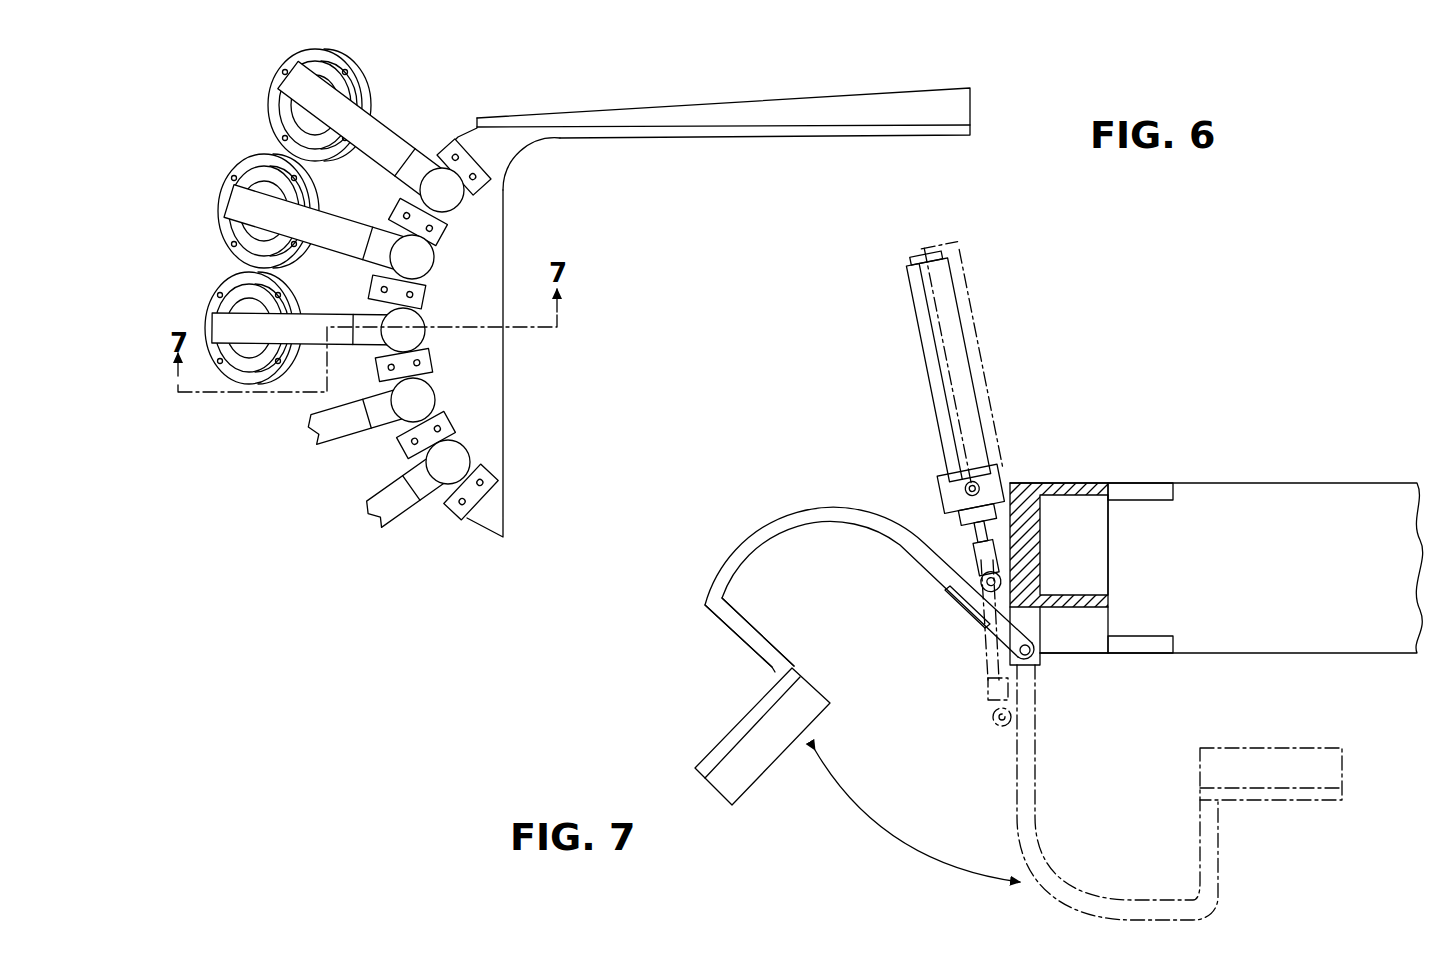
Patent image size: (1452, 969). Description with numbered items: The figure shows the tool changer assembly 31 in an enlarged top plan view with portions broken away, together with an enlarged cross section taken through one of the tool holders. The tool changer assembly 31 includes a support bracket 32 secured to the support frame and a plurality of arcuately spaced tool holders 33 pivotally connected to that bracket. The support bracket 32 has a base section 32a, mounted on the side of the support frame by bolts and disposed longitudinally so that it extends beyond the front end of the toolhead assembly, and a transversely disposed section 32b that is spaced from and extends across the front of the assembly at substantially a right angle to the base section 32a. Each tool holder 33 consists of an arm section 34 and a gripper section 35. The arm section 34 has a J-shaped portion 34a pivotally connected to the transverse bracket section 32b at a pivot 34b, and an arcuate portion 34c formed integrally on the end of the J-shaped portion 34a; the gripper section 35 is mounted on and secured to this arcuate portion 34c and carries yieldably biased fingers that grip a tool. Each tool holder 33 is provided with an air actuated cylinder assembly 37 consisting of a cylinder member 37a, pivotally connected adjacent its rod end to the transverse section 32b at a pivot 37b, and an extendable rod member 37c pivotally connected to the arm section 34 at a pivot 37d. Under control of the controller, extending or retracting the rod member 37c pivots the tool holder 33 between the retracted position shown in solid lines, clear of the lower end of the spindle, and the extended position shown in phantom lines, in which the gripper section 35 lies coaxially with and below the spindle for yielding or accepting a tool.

In FIG. 6, the tool changer assembly 31 is at (238, 122).
In FIG. 6, the support bracket 32 is at (768, 112).
In FIG. 7, the support bracket 32 is at (1154, 567).
In FIG. 6, the base section 32a is at (865, 133).
In FIG. 7, the base section 32a is at (1333, 637).
In FIG. 6, the transversely disposed section 32b is at (507, 487).
In FIG. 7, the transversely disposed section 32b is at (1108, 598).
In FIG. 6, the tool holder 33 is at (388, 148).
In FIG. 7, the tool holder 33 is at (880, 647).
In FIG. 7, the arm section 34 is at (910, 647).
In FIG. 7, the J-shaped portion 34a is at (917, 553).
In FIG. 7, the pivotal connection 34b is at (1035, 660).
In FIG. 7, the arcuate portion 34c is at (768, 770).
In FIG. 6, the gripper section 35 is at (232, 240).
In FIG. 7, the gripper section 35 is at (712, 758).
In FIG. 7, the air actuated cylinder assembly 37 is at (997, 484).
In FIG. 7, the cylinder member 37a is at (954, 364).
In FIG. 7, the pivotal connection 37b is at (972, 496).
In FIG. 7, the extendable rod member 37c is at (984, 548).
In FIG. 7, the pivotal connection 37d is at (991, 582).